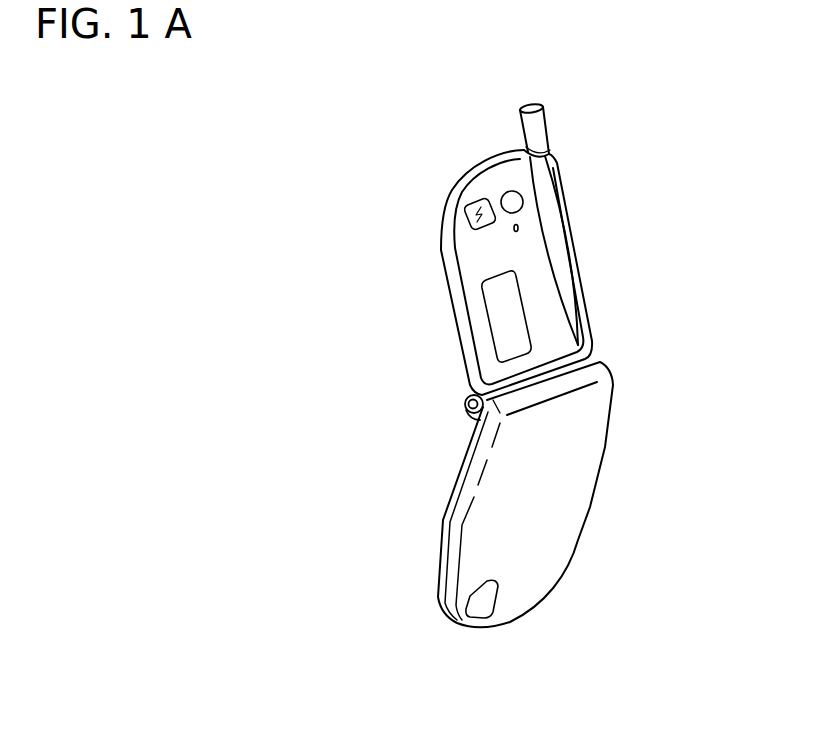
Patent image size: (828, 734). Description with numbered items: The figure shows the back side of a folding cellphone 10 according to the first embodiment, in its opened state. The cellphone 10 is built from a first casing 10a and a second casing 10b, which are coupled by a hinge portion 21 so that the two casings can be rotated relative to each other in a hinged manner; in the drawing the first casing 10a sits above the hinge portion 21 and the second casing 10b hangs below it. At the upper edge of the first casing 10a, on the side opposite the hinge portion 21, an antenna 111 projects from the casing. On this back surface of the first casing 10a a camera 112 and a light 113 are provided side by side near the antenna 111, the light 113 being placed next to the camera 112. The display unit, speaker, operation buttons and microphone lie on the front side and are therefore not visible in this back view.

The folding cellphone 10 is at (525, 339).
The first casing 10a is at (446, 288).
The second casing 10b is at (448, 512).
The hinge portion 21 is at (465, 408).
The antenna 111 is at (546, 127).
The camera 112 is at (465, 217).
The light 113 is at (507, 191).